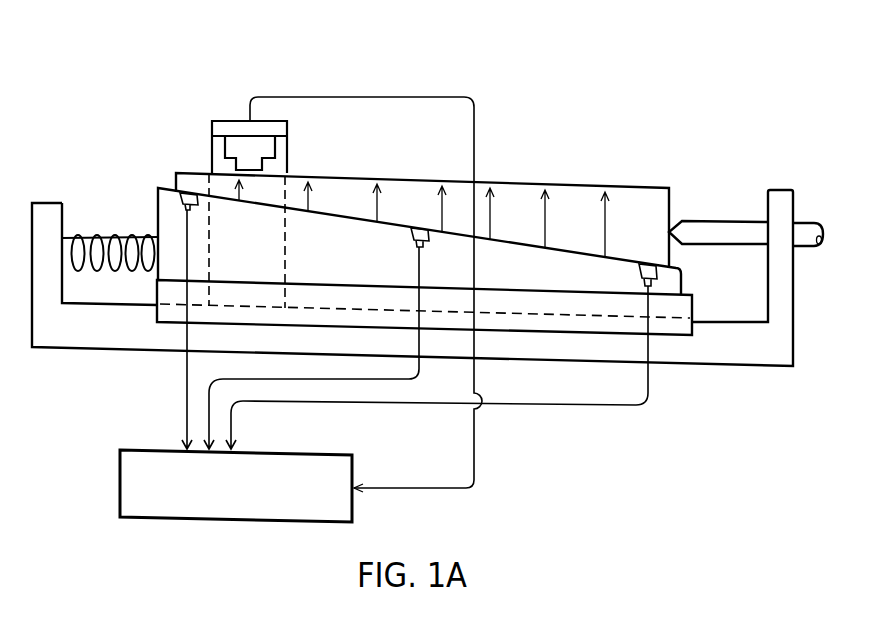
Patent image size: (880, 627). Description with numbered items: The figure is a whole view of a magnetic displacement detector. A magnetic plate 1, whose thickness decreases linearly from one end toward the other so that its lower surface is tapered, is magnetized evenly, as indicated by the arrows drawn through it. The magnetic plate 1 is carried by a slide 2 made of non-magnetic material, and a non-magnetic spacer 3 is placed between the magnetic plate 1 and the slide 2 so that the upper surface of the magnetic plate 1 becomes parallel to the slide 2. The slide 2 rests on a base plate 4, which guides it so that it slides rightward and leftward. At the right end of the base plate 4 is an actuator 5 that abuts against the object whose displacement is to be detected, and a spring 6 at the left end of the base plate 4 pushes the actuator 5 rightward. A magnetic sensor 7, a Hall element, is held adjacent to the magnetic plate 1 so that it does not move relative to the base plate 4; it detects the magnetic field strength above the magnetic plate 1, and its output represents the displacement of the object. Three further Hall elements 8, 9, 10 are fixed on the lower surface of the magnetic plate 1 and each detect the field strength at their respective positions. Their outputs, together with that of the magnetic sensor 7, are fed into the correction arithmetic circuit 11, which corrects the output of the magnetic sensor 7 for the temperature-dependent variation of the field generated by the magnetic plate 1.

The magnetic plate 1 is at (518, 180).
The slide 2 is at (583, 332).
The spacer 3 is at (489, 268).
The base plate 4 is at (68, 332).
The actuator 5 is at (730, 239).
The spring 6 is at (90, 234).
The magnetic sensor 7 is at (252, 163).
The Hall element 8 is at (197, 200).
The Hall element 9 is at (412, 241).
The Hall element 10 is at (640, 273).
The correction arithmetic circuit 11 is at (120, 492).